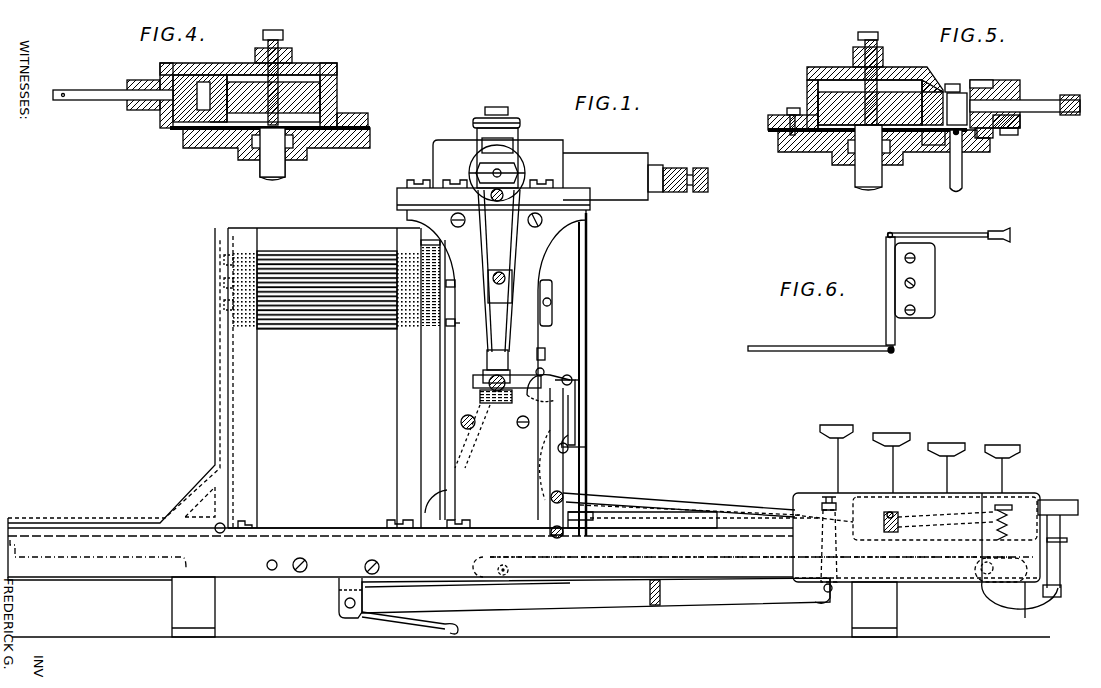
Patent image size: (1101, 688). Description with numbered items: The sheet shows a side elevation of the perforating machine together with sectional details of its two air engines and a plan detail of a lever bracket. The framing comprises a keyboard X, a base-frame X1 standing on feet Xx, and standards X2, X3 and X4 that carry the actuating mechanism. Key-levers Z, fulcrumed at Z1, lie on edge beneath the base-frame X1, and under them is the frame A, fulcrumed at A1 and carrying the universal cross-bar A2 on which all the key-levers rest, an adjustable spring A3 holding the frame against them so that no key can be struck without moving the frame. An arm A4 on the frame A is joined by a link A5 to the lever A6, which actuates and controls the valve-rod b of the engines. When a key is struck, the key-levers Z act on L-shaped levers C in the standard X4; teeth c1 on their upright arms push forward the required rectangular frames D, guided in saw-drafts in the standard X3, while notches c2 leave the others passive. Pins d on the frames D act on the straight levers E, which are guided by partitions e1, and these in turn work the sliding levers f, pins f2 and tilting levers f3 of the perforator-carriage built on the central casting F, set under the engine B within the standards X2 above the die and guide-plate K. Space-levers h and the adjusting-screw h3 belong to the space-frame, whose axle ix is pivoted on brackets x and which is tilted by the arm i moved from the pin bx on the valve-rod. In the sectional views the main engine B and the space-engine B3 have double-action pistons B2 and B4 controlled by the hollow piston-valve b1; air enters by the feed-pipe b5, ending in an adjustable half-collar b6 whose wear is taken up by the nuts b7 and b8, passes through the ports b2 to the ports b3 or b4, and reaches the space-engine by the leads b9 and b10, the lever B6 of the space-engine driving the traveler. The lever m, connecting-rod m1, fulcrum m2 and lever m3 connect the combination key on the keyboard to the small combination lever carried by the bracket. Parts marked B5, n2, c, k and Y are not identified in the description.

In FIG. 4, the main engine B is at (300, 63).
In FIG. 5, the main engine B is at (827, 68).
In FIG. 1, the main engine B is at (452, 145).
In FIG. 4, the double-action piston B2 is at (298, 92).
In FIG. 5, the double-action piston B2 is at (888, 92).
In FIG. 4, the space-engine B3 is at (190, 143).
In FIG. 1, the space-engine B3 is at (605, 176).
In FIG. 4, the double-action piston B4 is at (167, 131).
In FIG. 4, the plunger rod B5 is at (91, 100).
In FIG. 1, the plunger rod B5 is at (520, 170).
In FIG. 1, the lever of space-engine B6 is at (511, 251).
In FIG. 5, the valve-rod b is at (957, 168).
In FIG. 1, the valve-rod b is at (585, 415).
In FIG. 5, the hollow piston-valve b1 is at (957, 109).
In FIG. 5, the valve ports b2 is at (957, 92).
In FIG. 5, the port b3 is at (933, 85).
In FIG. 5, the port b4 is at (937, 136).
In FIG. 5, the feed-pipe b5 is at (981, 104).
In FIG. 1, the feed-pipe b5 is at (680, 193).
In FIG. 5, the adjustable half-collar b6 is at (1025, 96).
In FIG. 5, the nut b7 is at (1033, 118).
In FIG. 1, the nut b7 is at (660, 166).
In FIG. 5, the nut b8 is at (1007, 126).
In FIG. 4, the lead b9 is at (205, 73).
In FIG. 4, the lead b10 is at (213, 130).
In FIG. 5, the pin bx is at (981, 133).
In FIG. 1, the pin bx is at (585, 450).
In FIG. 6, the bracket plate n2 is at (891, 292).
In FIG. 1, the lever m is at (553, 477).
In FIG. 6, the connecting-rod m1 is at (822, 351).
In FIG. 1, the connecting-rod m1 is at (632, 511).
In FIG. 1, the fulcrum m2 is at (882, 514).
In FIG. 6, the lever m3 is at (950, 237).
In FIG. 1, the lever m3 is at (938, 513).
In FIG. 1, the keyboard X is at (916, 503).
In FIG. 1, the base-frame X1 is at (521, 547).
In FIG. 1, the standard X2 is at (488, 358).
In FIG. 1, the standard X3 is at (409, 377).
In FIG. 1, the standard X4 is at (216, 422).
In FIG. 1, the feet Xx is at (534, 607).
In FIG. 1, the key-levers Z is at (73, 581).
In FIG. 1, the fulcrum Z1 is at (268, 562).
In FIG. 1, the L-shaped levers C is at (218, 372).
In FIG. 1, the pivot pin c is at (220, 534).
In FIG. 1, the teeth c1 is at (240, 262).
In FIG. 1, the notches c2 is at (228, 290).
In FIG. 1, the rectangular frames D is at (345, 320).
In FIG. 1, the pins d is at (432, 322).
In FIG. 1, the straight levers E is at (445, 344).
In FIG. 1, the saw drafts or partitions e1 is at (431, 246).
In FIG. 1, the central casting F is at (548, 284).
In FIG. 1, the sliding levers f is at (455, 288).
In FIG. 1, the pins f2 is at (456, 325).
In FIG. 1, the tilting levers f3 is at (552, 301).
In FIG. 1, the space-levers h is at (452, 386).
In FIG. 1, the adjusting-screw h3 is at (505, 403).
In FIG. 1, the die and guide plates K is at (497, 412).
In FIG. 1, the pin k is at (544, 371).
In FIG. 1, the brackets x is at (548, 391).
In FIG. 1, the arm i is at (598, 396).
In FIG. 1, the axle ix is at (572, 381).
In FIG. 1, the frame A is at (598, 604).
In FIG. 1, the fulcrum A1 is at (352, 612).
In FIG. 1, the cross-bar A2 is at (656, 606).
In FIG. 1, the adjustable spring A3 is at (427, 625).
In FIG. 1, the arm A4 is at (760, 596).
In FIG. 1, the link A5 is at (835, 570).
In FIG. 1, the lever A6 is at (610, 528).
In FIG. 1, the guide Y is at (1060, 505).